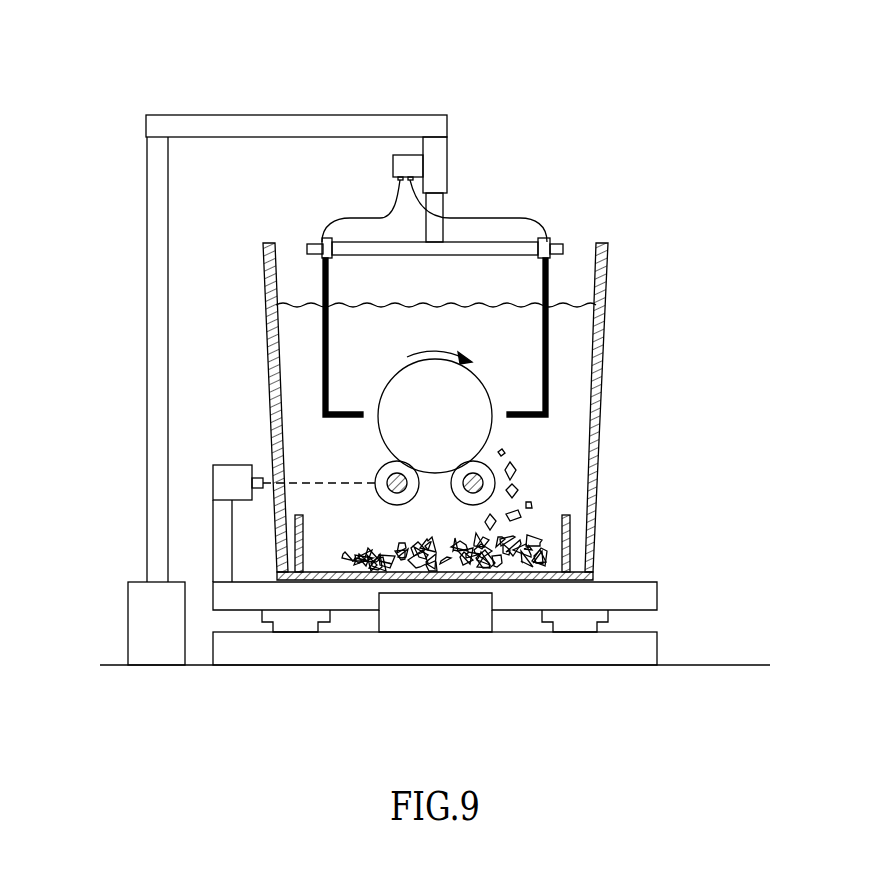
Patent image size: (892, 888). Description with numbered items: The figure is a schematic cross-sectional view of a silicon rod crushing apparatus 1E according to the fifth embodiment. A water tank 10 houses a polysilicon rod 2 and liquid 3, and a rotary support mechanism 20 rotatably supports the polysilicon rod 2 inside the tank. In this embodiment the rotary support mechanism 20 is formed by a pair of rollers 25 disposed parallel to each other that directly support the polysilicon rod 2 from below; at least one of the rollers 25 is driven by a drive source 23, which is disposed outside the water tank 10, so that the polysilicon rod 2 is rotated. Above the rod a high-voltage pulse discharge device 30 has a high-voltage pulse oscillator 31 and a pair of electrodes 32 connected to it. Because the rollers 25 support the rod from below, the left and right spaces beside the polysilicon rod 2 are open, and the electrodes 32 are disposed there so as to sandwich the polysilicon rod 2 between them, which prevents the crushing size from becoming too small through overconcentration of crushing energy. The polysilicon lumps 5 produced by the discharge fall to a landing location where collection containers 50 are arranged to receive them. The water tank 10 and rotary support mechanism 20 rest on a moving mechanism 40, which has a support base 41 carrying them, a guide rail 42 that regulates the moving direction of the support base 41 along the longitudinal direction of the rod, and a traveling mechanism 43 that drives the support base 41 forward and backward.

The silicon rod crushing apparatus 1E is at (395, 39).
The polysilicon rod 2 is at (476, 381).
The liquid 3 is at (545, 452).
The polysilicon lumps 5 is at (532, 526).
The water tank 10 is at (600, 345).
The rotary support mechanism 20 is at (396, 480).
The drive source 23 is at (213, 483).
The rollers 25 is at (462, 501).
The high-voltage pulse discharge device 30 is at (568, 214).
The high-voltage pulse oscillator 31 is at (406, 162).
The electrodes 32 is at (323, 284).
The moving mechanism 40 is at (476, 617).
The support base 41 is at (657, 595).
The guide rail 42 is at (607, 618).
The traveling mechanism 43 is at (492, 621).
The collection containers 50 is at (569, 533).